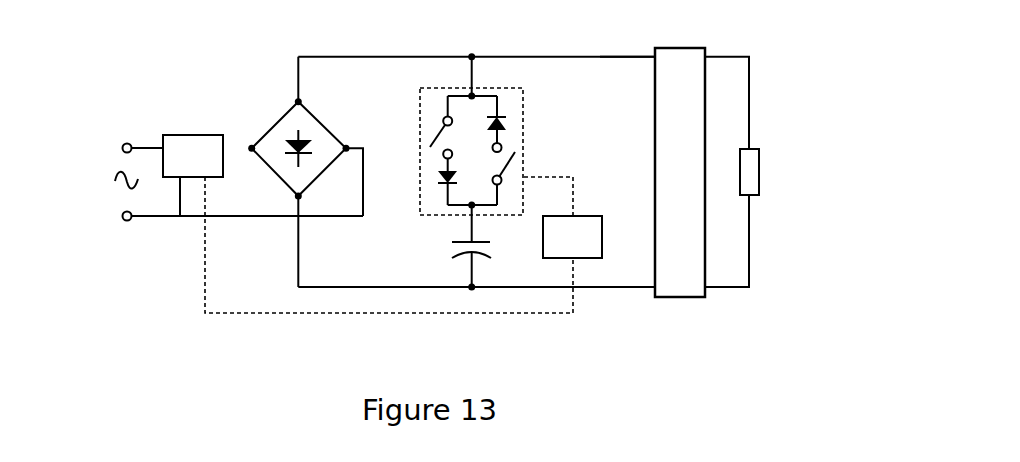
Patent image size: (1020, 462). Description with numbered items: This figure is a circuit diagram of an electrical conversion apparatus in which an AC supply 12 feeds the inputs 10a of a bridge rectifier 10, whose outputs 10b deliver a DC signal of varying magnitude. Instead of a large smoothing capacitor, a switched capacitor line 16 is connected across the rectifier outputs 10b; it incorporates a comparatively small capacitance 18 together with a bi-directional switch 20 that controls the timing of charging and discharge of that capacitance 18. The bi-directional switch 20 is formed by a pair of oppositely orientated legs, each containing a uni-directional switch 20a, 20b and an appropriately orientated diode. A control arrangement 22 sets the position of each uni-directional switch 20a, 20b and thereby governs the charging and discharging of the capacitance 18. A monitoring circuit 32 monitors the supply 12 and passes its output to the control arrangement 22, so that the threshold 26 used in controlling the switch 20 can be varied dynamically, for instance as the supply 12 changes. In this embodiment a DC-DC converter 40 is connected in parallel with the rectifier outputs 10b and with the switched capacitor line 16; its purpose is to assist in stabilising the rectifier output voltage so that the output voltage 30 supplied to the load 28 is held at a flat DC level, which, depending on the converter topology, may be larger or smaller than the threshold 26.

The bridge rectifier 10 is at (287, 138).
The rectifier inputs 10a is at (250, 147).
The rectifier outputs 10b is at (297, 99).
The supply 12 is at (112, 180).
The switched capacitor line 16 is at (468, 73).
The capacitance 18 is at (450, 248).
The bi-directional switch 20 is at (515, 88).
The uni-directional switch 20a is at (438, 143).
The uni-directional switch 20b is at (507, 155).
The control arrangement 22 is at (562, 217).
The threshold 26 is at (205, 277).
The load 28 is at (762, 172).
The output voltage 30 is at (637, 59).
The monitoring circuit 32 is at (193, 175).
The DC-DC converter 40 is at (680, 172).